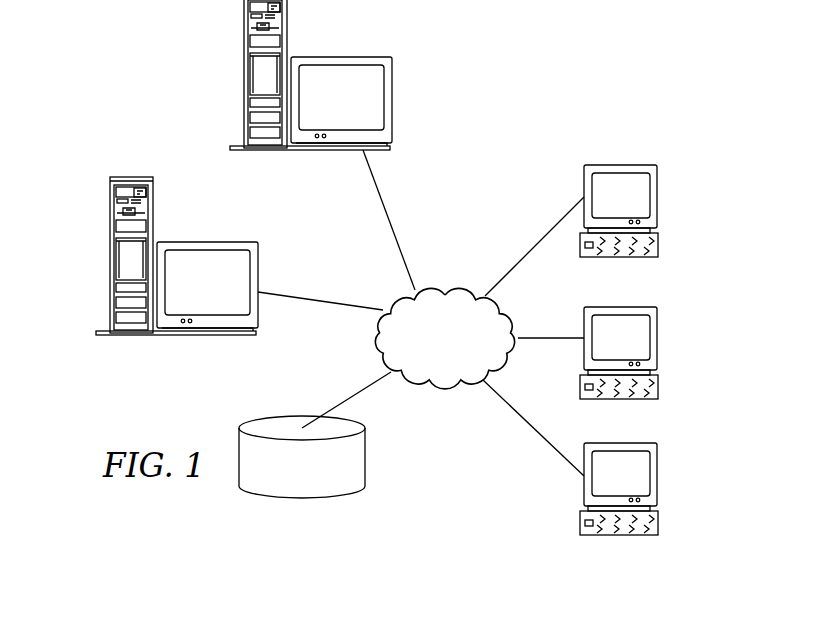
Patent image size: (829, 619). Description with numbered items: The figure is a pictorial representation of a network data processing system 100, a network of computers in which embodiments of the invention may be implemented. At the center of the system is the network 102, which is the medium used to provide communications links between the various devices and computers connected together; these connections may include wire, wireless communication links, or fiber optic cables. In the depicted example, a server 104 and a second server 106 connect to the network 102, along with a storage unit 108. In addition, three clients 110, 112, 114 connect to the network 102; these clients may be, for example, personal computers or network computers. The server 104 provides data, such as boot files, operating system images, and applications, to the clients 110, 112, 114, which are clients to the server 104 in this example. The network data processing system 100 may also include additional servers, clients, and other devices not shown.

The network data processing system 100 is at (528, 132).
The network 102 is at (445, 288).
The server 104 is at (112, 258).
The server 106 is at (246, 72).
The storage unit 108 is at (282, 499).
The client 110 is at (657, 196).
The client 112 is at (657, 338).
The client 114 is at (657, 470).